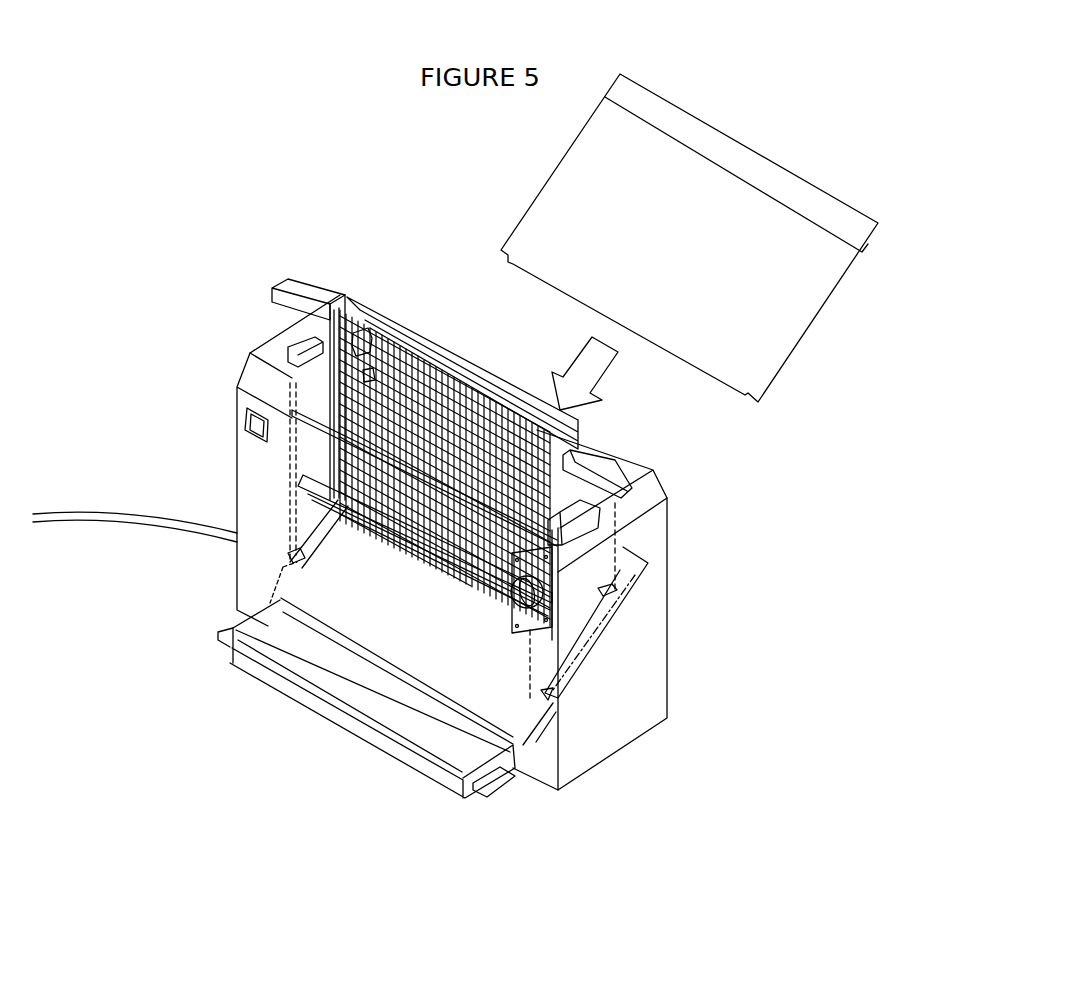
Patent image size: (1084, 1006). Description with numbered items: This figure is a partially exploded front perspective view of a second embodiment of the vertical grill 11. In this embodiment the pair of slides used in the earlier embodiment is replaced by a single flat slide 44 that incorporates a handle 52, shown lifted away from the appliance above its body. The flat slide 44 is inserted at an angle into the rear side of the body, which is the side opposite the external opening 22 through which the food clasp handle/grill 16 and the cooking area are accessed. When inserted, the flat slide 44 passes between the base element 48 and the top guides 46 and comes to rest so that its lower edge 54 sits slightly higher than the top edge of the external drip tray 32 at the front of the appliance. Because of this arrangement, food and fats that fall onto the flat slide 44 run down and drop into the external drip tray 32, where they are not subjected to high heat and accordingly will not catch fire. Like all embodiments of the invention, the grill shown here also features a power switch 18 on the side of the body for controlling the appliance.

The vertical grill 11 is at (65, 137).
The food clasp handle/grill 16 is at (419, 392).
The power switch 18 is at (243, 412).
The external opening 22 is at (425, 680).
The external drip tray 32 is at (297, 660).
The flat slide 44 is at (598, 197).
The top guides 46 is at (297, 558).
The base element 48 is at (580, 673).
The handle 52 is at (652, 108).
The lower edge 54 is at (393, 673).